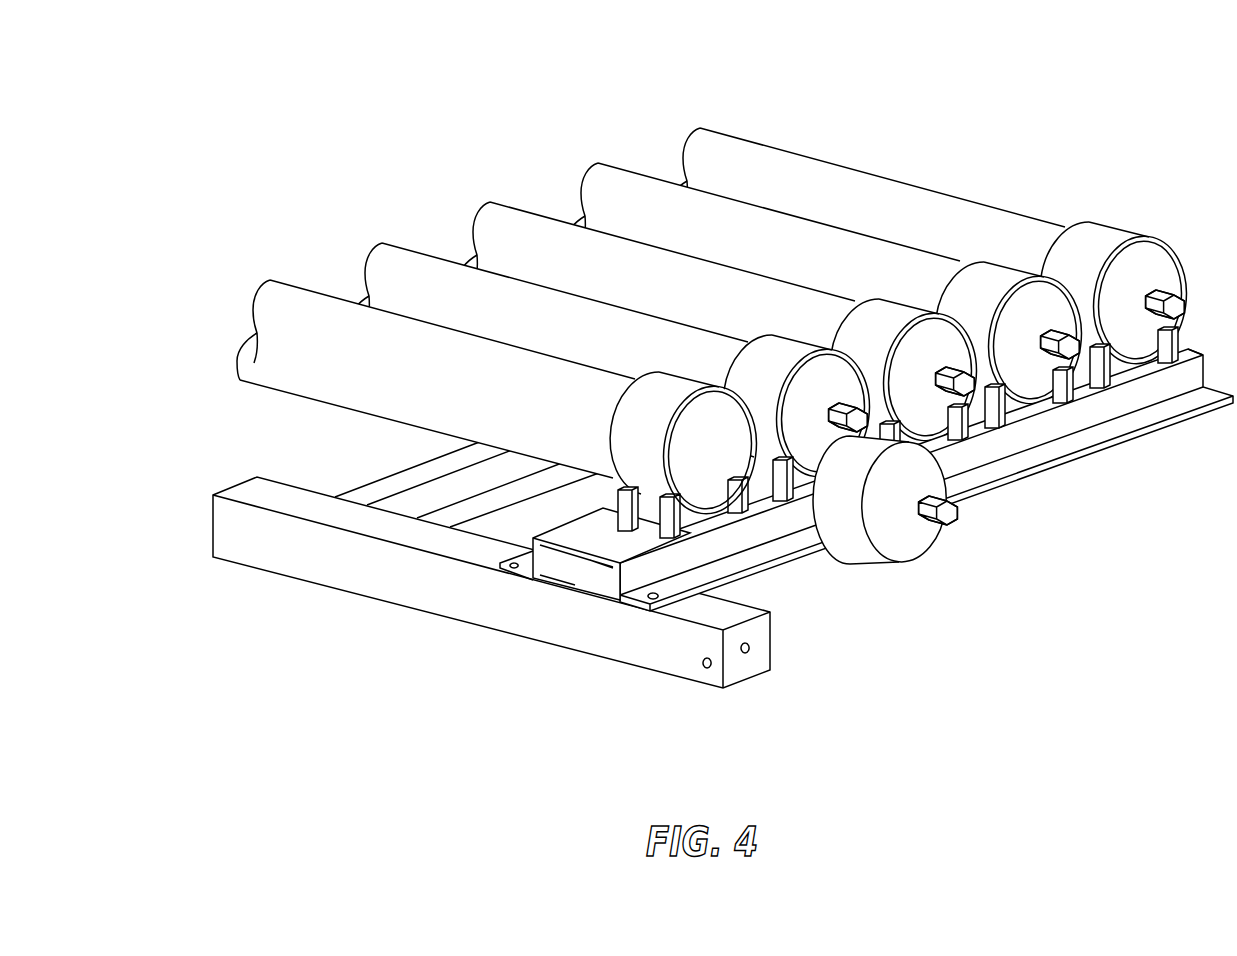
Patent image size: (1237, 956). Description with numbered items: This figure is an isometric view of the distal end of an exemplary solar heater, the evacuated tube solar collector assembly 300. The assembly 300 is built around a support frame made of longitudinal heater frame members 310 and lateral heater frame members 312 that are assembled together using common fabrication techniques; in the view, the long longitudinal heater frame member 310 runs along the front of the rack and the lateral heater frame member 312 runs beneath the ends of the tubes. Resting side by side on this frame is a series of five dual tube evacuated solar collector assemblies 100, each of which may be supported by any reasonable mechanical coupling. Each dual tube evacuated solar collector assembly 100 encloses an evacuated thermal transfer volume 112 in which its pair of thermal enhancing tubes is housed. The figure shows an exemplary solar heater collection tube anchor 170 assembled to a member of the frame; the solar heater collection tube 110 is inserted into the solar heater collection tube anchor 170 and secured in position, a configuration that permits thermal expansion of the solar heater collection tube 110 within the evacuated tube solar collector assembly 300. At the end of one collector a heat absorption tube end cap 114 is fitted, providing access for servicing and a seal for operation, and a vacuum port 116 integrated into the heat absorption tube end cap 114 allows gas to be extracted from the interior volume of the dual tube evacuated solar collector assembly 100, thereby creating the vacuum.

The evacuated tube solar collector assembly 300 is at (715, 373).
The dual tube evacuated solar collector assembly 100 is at (704, 327).
The solar heater collection tube 110 is at (494, 403).
The evacuated thermal transfer volume 112 is at (737, 467).
The heat absorption tube end cap 114 is at (931, 529).
The vacuum port 116 is at (957, 515).
The solar heater collection tube anchor 170 is at (633, 450).
The longitudinal heater frame member 310 is at (403, 580).
The lateral heater frame member 312 is at (1045, 428).